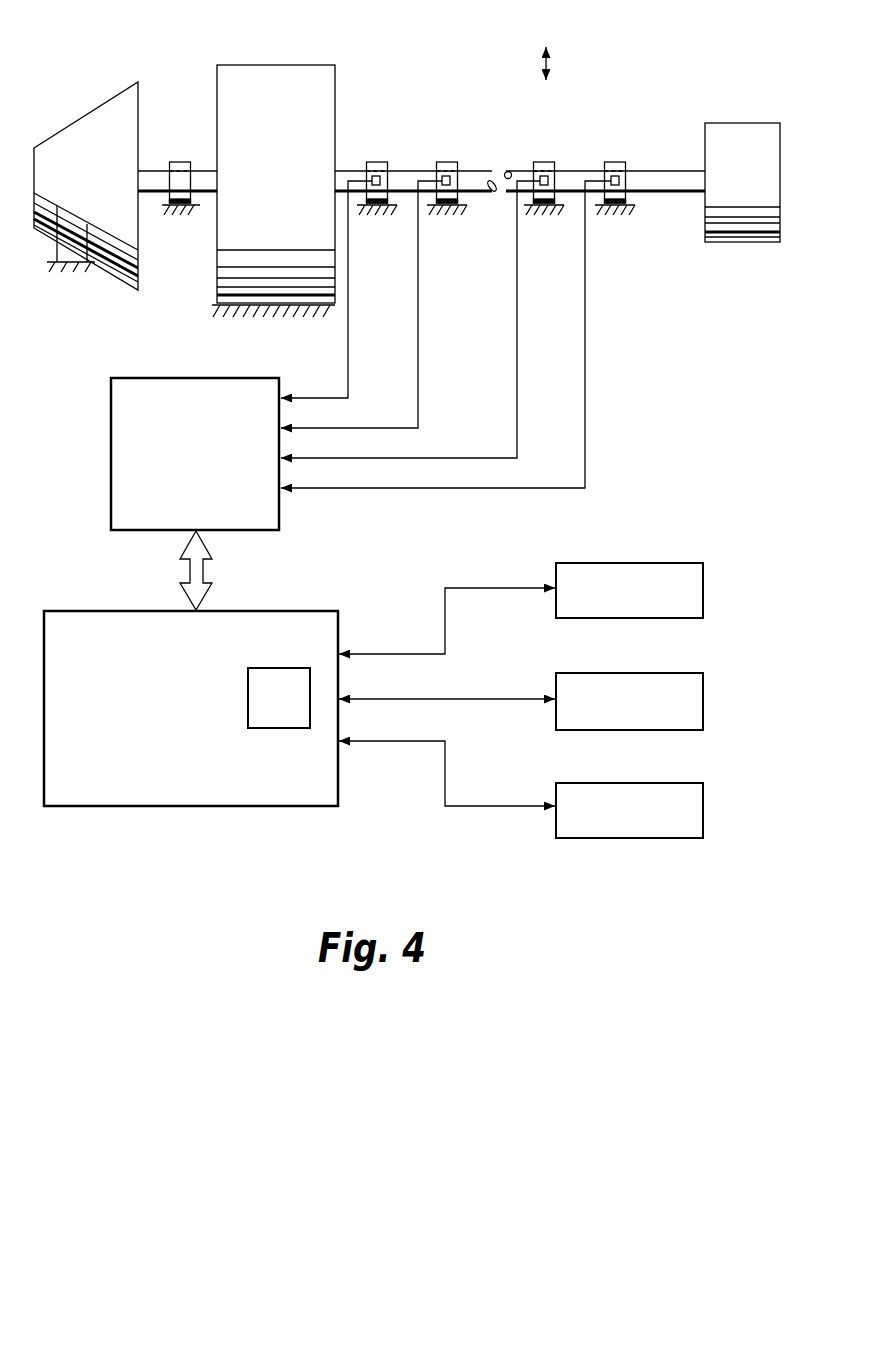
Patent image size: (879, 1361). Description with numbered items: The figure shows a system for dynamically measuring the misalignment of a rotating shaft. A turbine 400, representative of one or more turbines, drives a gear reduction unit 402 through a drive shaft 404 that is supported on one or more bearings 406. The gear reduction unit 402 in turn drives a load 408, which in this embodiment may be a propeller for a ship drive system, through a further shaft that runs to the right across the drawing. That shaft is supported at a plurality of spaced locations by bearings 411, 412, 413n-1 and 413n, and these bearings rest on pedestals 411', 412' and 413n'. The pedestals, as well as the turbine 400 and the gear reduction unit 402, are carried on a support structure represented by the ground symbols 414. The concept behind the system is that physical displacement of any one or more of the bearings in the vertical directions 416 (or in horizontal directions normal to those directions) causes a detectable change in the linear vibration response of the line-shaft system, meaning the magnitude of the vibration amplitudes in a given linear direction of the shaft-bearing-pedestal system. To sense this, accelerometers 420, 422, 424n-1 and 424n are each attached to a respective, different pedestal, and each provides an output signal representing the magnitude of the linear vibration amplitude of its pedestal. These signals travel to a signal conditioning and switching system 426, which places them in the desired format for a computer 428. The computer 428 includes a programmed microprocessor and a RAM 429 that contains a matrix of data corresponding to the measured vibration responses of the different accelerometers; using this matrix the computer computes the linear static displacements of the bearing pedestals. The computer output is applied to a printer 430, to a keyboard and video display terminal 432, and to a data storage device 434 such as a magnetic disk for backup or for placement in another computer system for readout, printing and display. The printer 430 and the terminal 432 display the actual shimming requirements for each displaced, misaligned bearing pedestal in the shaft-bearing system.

The turbine 400 is at (85, 120).
The gear reduction unit 402 is at (278, 65).
The drive shaft 404 is at (150, 196).
The bearing 406 is at (181, 160).
The load 408 is at (745, 125).
The bearing 411 is at (386, 160).
The pedestal 411' is at (356, 152).
The bearing 412 is at (451, 160).
The pedestal 412' is at (474, 226).
The bearing 413n-1 is at (545, 162).
The bearing 413n is at (605, 160).
The pedestal 413n' is at (660, 230).
The support structure 414 is at (62, 273).
The vertical directions 416 is at (548, 62).
The accelerometer 420 is at (388, 180).
The accelerometer 422 is at (458, 181).
The accelerometer 424n-1 is at (557, 186).
The accelerometer 424n is at (626, 180).
The signal conditioning and switching system 426 is at (111, 475).
The computer 428 is at (197, 726).
The RAM 429 is at (279, 729).
The printer 430 is at (637, 562).
The keyboard and video display terminal (VDT) 432 is at (632, 730).
The data storage device 434 is at (635, 838).